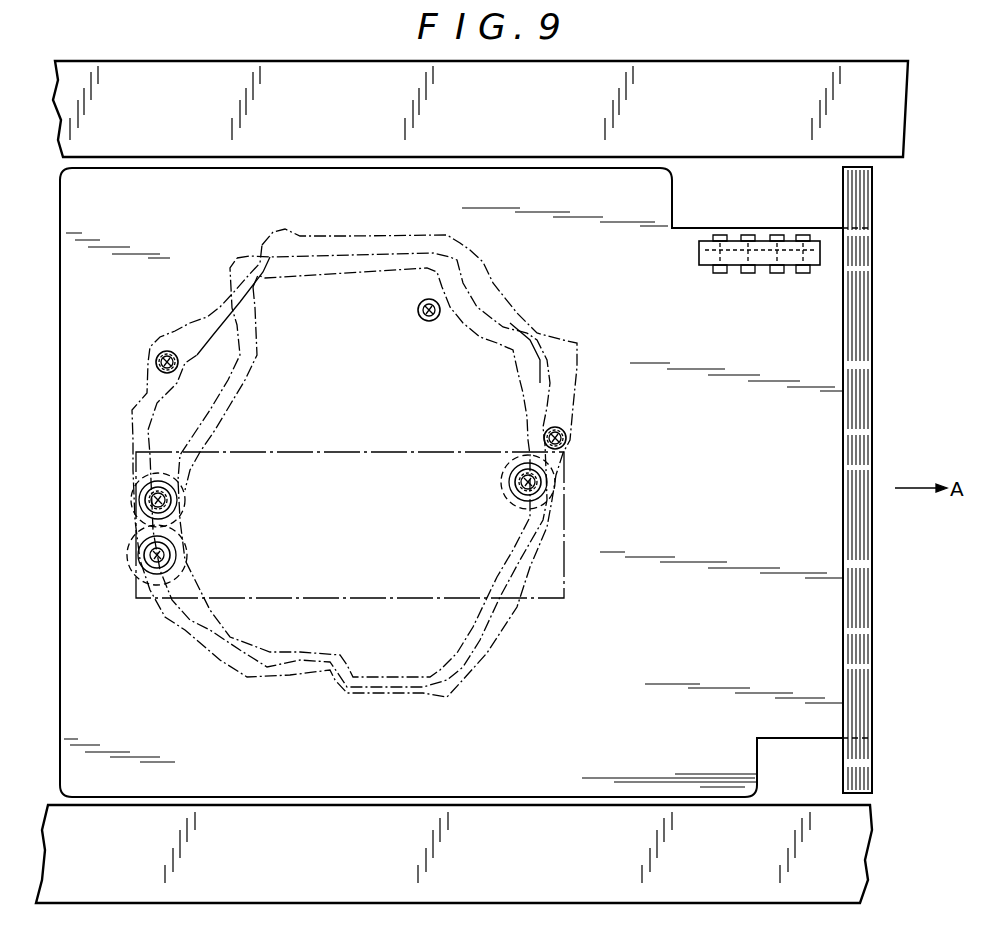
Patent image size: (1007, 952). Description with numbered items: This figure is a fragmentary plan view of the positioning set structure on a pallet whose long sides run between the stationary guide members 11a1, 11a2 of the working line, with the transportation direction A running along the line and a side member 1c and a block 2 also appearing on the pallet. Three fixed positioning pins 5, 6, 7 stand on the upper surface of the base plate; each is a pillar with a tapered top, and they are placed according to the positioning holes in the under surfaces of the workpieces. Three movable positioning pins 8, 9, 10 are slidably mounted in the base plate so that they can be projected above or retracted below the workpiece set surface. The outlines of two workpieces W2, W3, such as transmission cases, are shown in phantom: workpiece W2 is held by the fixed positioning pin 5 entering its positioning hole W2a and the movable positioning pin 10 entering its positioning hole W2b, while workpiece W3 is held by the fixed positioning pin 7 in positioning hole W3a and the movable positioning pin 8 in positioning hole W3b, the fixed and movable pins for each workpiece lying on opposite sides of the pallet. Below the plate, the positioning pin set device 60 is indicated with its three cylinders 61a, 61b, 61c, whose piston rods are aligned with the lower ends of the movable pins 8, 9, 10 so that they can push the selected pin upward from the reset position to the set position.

The stationary guide member 11a1 is at (705, 75).
The stationary guide member 11a2 is at (858, 877).
The side rail 1c is at (865, 346).
The terminal block 2 is at (760, 283).
The fixed positioning pin 5 is at (168, 351).
The fixed positioning pin 6 is at (421, 319).
The fixed positioning pin 7 is at (566, 433).
The movable positioning pin 8 is at (168, 502).
The movable positioning pin 9 is at (168, 558).
The movable positioning pin 10 is at (538, 488).
The positioning pin set device 60 is at (580, 593).
The cylinder 61a is at (129, 505).
The cylinder 61b is at (129, 585).
The cylinder 61c is at (501, 470).
The workpiece W2 is at (490, 266).
The workpiece W3 is at (575, 346).
The positioning hole W2a is at (158, 356).
The positioning hole W2b is at (517, 491).
The positioning hole W3a is at (566, 448).
The positioning hole W3b is at (175, 514).